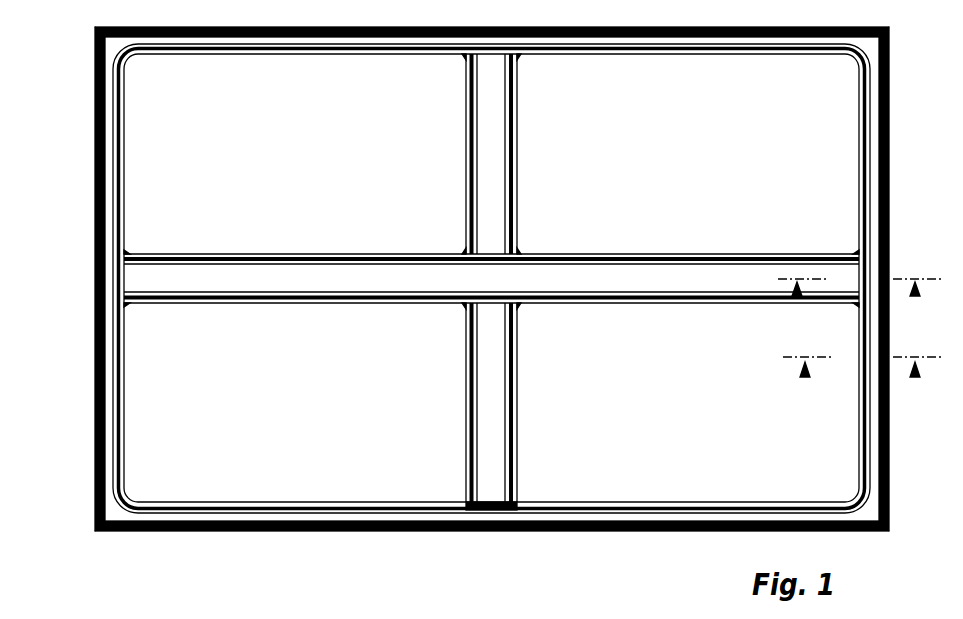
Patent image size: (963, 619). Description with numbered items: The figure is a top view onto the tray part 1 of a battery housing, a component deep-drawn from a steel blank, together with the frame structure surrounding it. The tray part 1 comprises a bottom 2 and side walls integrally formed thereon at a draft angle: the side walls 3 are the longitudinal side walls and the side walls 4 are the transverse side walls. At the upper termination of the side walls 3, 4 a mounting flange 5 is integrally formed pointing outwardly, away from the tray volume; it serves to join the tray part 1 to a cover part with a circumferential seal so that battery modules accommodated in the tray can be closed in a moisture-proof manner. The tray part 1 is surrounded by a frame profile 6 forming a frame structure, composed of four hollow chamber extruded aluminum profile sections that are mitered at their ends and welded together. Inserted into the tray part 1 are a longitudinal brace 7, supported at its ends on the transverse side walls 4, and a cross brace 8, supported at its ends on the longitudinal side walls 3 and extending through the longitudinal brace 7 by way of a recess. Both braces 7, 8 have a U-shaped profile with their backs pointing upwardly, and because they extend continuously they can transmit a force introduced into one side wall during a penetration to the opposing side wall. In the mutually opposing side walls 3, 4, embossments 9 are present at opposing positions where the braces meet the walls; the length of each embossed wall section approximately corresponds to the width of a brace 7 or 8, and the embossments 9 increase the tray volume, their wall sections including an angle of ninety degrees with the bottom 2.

The tray part 1 is at (190, 140).
The bottom 2 is at (672, 170).
The longitudinal side walls 3 is at (405, 47).
The transverse side walls 4 is at (120, 358).
The mounting flange 5 is at (250, 37).
The frame profile 6 is at (888, 112).
The longitudinal brace 7 is at (588, 286).
The cross brace 8 is at (497, 170).
The embossments 9 is at (515, 55).